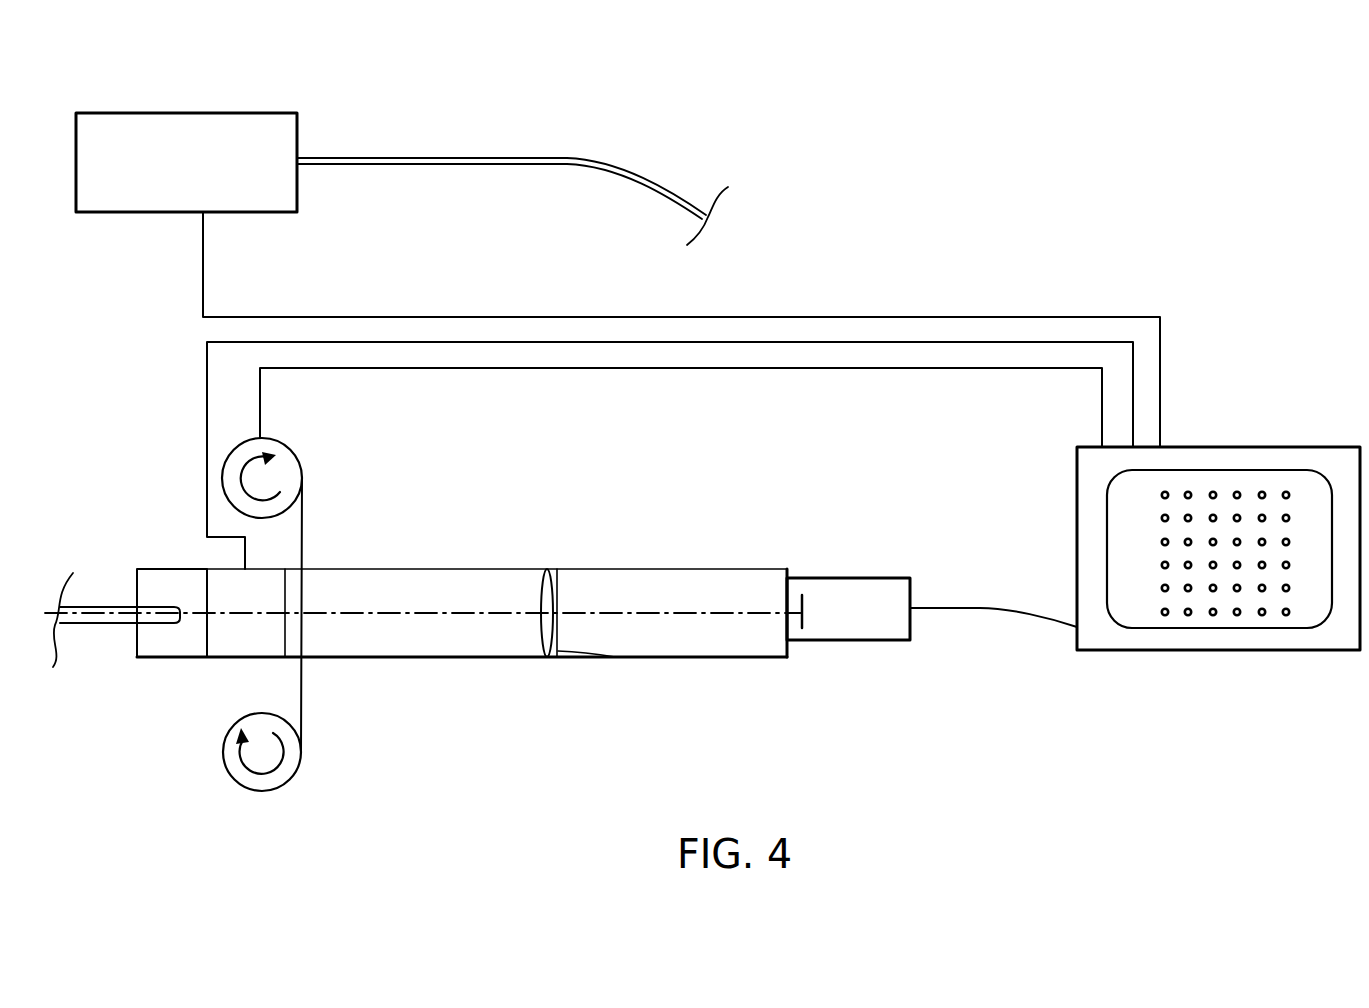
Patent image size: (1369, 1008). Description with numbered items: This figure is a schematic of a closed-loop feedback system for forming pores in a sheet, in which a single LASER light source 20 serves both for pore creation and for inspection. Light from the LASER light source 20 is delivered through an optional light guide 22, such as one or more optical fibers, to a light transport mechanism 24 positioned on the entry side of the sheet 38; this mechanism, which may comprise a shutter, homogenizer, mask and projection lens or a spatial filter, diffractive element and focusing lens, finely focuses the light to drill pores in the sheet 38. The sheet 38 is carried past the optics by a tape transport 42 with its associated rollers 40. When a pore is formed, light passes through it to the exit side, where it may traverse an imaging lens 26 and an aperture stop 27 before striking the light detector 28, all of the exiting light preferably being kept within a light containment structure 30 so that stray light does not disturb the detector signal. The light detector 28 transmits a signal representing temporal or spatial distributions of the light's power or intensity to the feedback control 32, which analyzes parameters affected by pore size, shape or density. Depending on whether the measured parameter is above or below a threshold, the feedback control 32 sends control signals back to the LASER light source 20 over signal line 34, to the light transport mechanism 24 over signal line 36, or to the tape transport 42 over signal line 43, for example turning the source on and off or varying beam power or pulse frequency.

The LASER light source 20 is at (196, 113).
The light guide 22 is at (468, 155).
The light transport mechanism 24 is at (233, 658).
The imaging lens 26 is at (555, 569).
The aperture stop 27 is at (613, 656).
The light detector 28 is at (802, 596).
The light containment structure 30 is at (745, 656).
The feedback control 32 is at (1193, 447).
The signal line 34 is at (900, 317).
The signal line 36 is at (862, 342).
The sheet 38 is at (301, 522).
The drive pulley 40 is at (277, 440).
The tape transport 42 is at (303, 767).
The signal line 43 is at (705, 370).